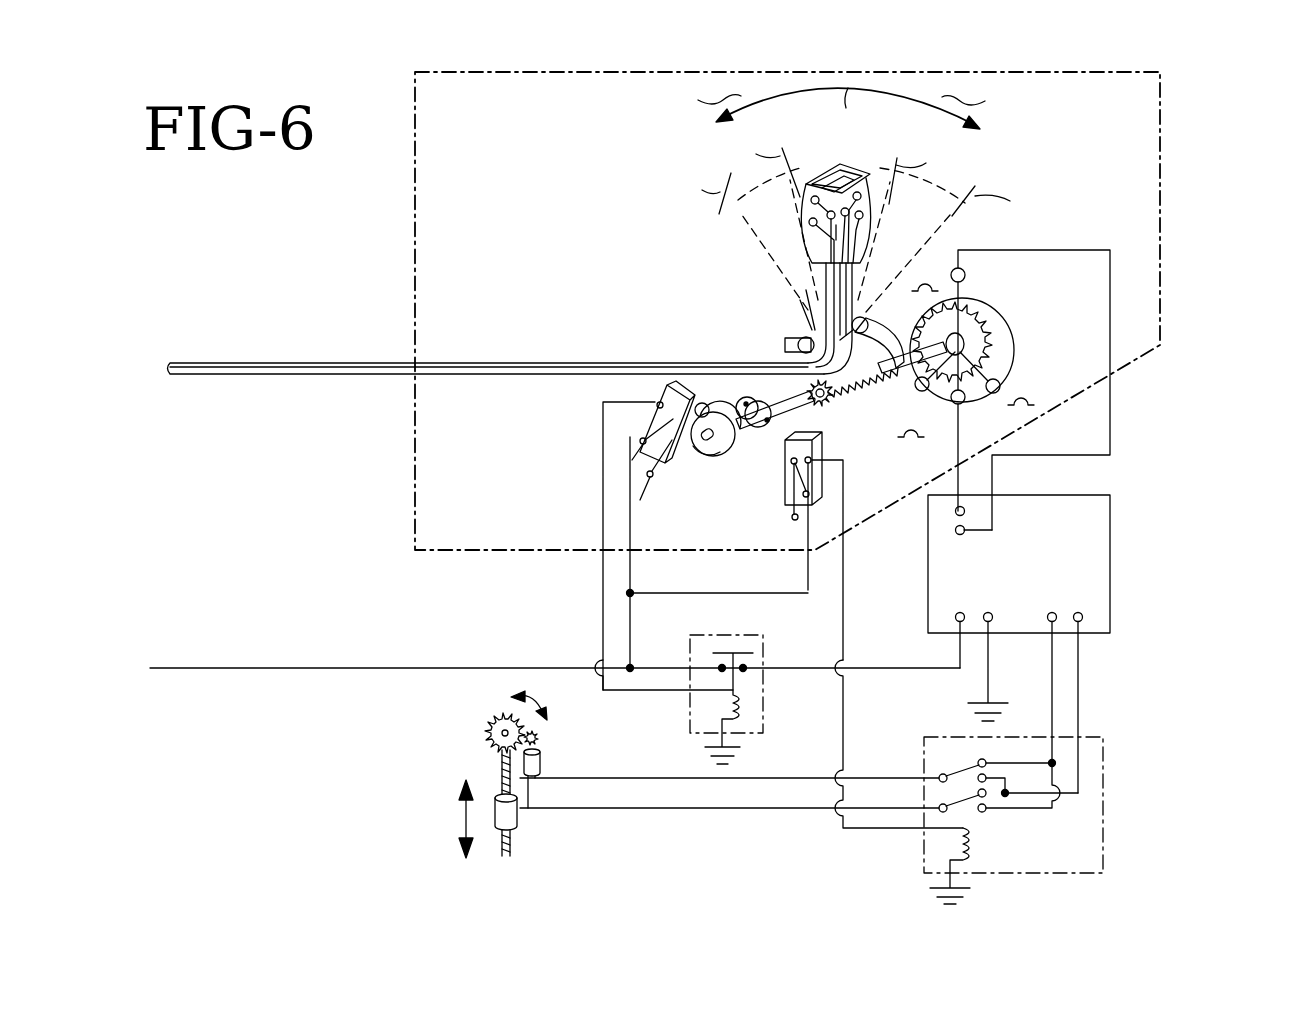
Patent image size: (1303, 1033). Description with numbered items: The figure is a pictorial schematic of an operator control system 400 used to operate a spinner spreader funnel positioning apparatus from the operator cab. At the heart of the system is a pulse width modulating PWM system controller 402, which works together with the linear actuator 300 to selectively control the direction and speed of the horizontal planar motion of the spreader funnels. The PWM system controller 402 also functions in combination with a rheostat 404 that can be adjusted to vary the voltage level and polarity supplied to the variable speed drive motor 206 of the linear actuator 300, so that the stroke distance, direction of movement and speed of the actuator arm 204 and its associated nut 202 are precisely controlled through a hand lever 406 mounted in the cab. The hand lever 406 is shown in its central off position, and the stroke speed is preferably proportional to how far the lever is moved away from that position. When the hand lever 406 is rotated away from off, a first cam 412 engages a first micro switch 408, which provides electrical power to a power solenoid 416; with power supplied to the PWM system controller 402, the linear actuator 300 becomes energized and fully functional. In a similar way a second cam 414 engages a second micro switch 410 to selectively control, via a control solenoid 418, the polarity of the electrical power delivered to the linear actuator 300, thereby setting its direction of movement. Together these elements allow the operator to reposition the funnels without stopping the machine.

The operator control system 400 is at (251, 254).
The PWM system controller 402 is at (1110, 604).
The rheostat 404 is at (1012, 324).
The hand lever 406 is at (861, 178).
The first micro switch 408 is at (638, 465).
The second micro switch 410 is at (816, 438).
The first cam 412 is at (713, 452).
The second cam 414 is at (772, 400).
The power solenoid 416 is at (767, 715).
The control solenoid 418 is at (1054, 820).
The linear actuator 300 is at (405, 777).
The nut 202 is at (515, 820).
The actuator arm 204 is at (505, 848).
The variable speed drive motor 206 is at (535, 741).